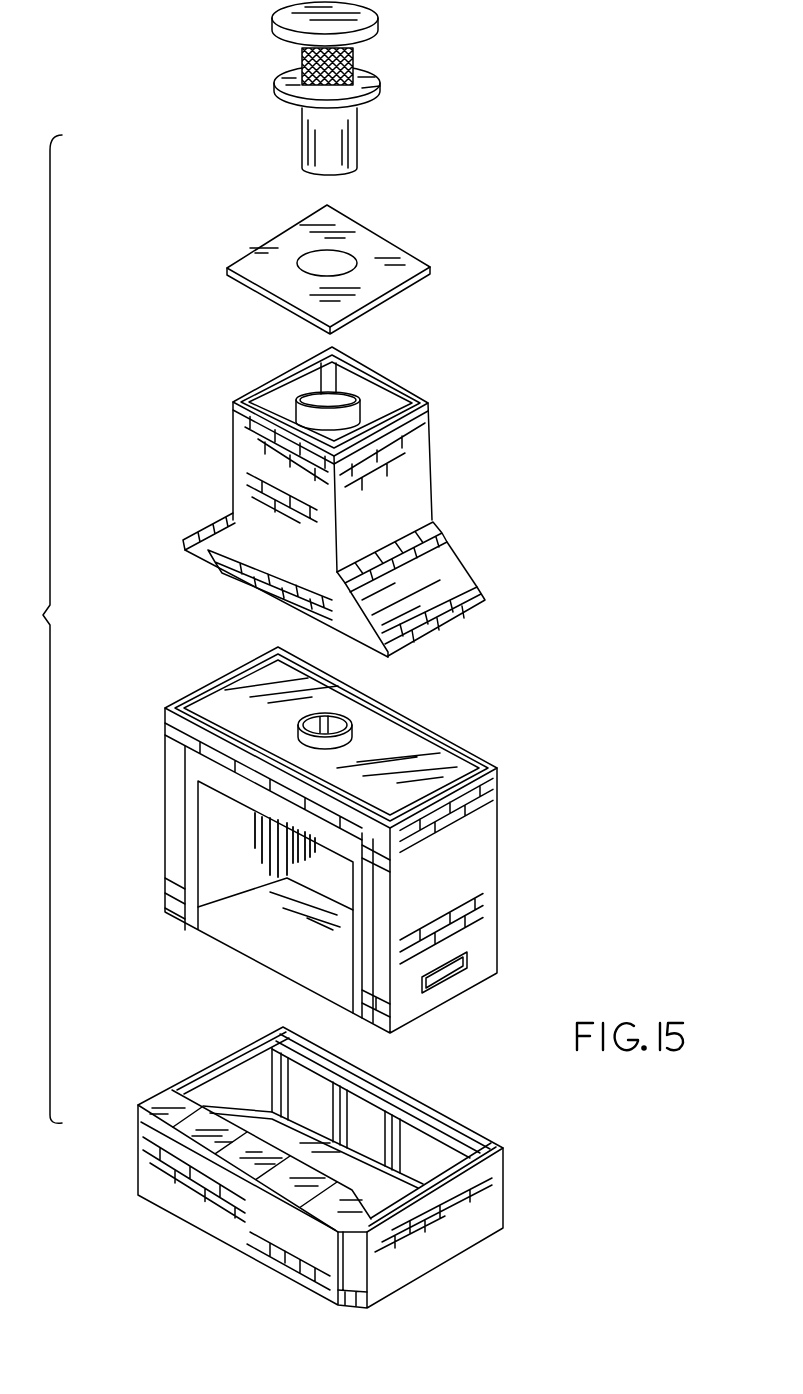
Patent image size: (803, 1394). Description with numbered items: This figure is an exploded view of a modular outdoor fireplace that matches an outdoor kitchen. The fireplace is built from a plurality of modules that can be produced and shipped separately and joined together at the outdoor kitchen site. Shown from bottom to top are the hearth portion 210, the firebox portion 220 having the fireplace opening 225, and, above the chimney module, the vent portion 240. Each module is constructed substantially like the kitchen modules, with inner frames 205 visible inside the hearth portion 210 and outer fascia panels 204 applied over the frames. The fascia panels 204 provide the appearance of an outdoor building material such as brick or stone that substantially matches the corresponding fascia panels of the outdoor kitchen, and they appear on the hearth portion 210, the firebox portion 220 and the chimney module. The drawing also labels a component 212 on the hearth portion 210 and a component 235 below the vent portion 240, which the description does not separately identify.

The vent portion 240 is at (353, 64).
The chimney top plate 235 is at (382, 248).
The fascia panels 204 is at (257, 522).
The firebox portion 220 is at (351, 840).
The fireplace opening 225 is at (230, 858).
The hearth portion 210 is at (357, 1167).
The hearth ledge 212 is at (174, 1100).
The inner frames 205 is at (342, 1105).